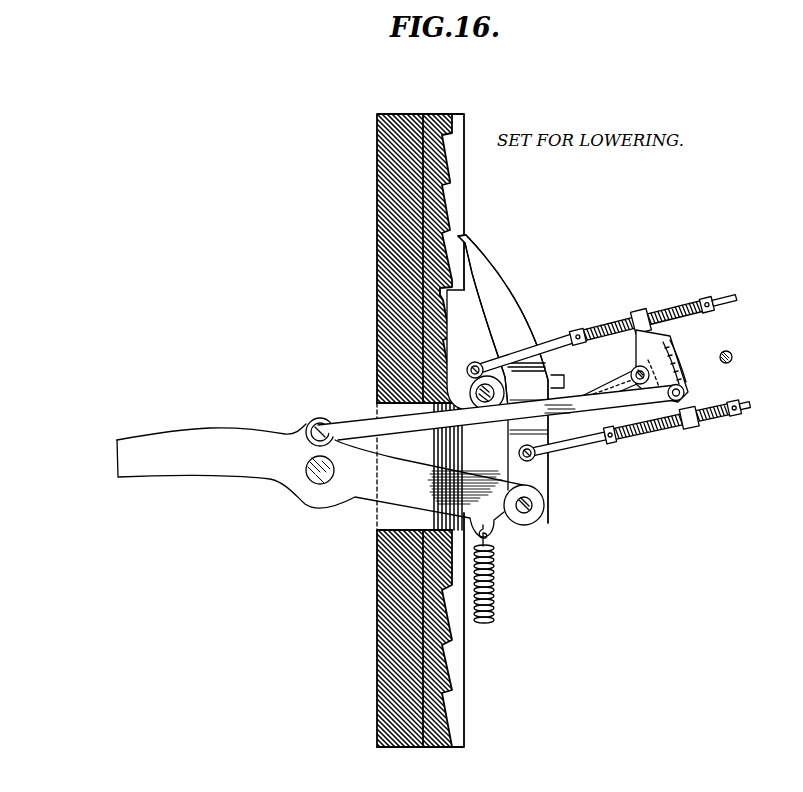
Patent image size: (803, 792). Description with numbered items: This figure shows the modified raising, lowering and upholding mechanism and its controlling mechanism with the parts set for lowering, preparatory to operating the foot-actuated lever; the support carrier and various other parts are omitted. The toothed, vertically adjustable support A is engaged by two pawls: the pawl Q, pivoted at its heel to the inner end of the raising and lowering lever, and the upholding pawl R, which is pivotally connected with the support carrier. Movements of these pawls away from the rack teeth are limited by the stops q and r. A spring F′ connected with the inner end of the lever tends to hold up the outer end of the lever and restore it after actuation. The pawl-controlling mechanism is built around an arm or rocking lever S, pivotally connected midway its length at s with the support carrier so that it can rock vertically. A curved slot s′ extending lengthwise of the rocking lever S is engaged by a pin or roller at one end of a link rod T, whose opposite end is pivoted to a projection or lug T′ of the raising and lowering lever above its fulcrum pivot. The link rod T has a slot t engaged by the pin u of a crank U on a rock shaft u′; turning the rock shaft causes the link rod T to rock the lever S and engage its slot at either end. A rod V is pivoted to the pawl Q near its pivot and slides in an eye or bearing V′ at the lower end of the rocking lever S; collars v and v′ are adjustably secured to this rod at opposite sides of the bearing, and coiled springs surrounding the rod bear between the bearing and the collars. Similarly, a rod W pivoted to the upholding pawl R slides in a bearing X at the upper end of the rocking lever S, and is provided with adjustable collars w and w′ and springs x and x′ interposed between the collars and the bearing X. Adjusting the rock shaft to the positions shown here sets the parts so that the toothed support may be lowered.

The vertically adjustable support A is at (398, 222).
The pawl Q is at (513, 295).
The upholding pawl R is at (470, 332).
The stop r is at (496, 340).
The slide rod W is at (525, 358).
The adjustable collar w′ is at (573, 322).
The spring x′ is at (602, 311).
The bearing X is at (642, 317).
The spring x is at (673, 298).
The adjustable collar w is at (711, 303).
The rocking lever S is at (670, 344).
The curved slot s′ is at (682, 352).
The pivot s is at (683, 372).
The crank U is at (605, 390).
The rock shaft u′ is at (637, 357).
The crank pin u is at (591, 413).
The slot t is at (607, 383).
The stop q is at (566, 383).
The link rod T is at (493, 419).
The projection or lug T′ is at (320, 420).
The slide rod V is at (553, 441).
The adjustable collar v′ is at (608, 453).
The eye or bearing V′ is at (686, 428).
The adjustable collar v is at (731, 414).
The spring F′ is at (498, 597).